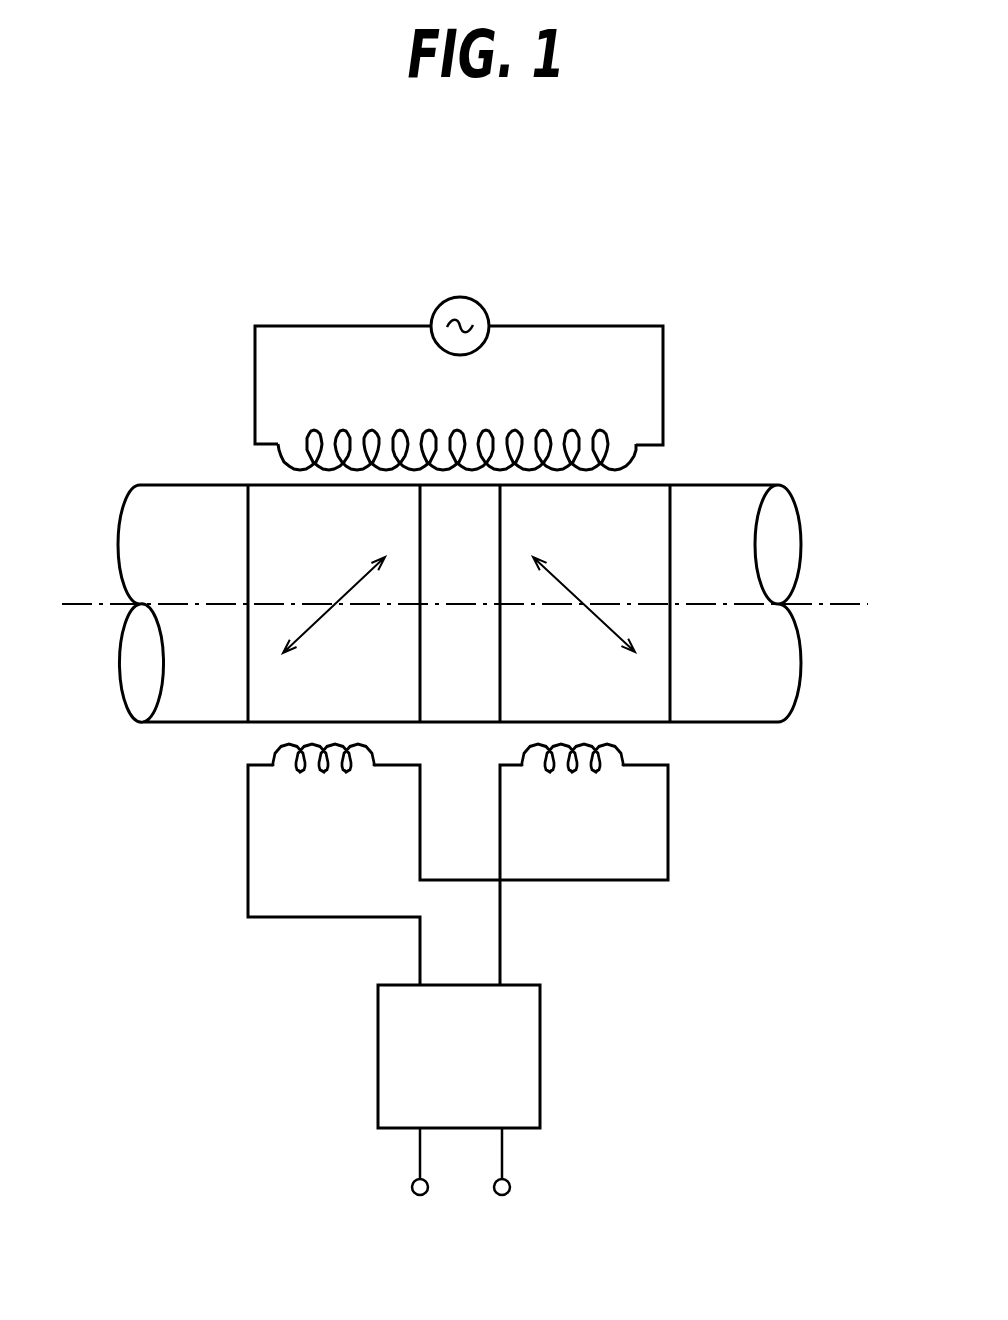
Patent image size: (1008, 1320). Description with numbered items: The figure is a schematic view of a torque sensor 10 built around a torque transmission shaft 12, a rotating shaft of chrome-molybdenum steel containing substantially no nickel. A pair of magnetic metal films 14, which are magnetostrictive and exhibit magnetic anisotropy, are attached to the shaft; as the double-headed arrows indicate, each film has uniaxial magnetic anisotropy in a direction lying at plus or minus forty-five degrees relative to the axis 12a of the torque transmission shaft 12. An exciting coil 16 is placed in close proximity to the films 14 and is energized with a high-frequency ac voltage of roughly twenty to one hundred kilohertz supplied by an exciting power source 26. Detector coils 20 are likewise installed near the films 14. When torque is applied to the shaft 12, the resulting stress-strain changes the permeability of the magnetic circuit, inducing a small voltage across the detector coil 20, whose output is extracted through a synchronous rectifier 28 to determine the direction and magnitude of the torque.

The torque sensor 10 is at (689, 301).
The torque transmission shaft 12 is at (740, 500).
The axis of the torque transmission shaft 12a is at (855, 606).
The magnetic metal film 14 is at (272, 500).
The exciting coil 16 is at (578, 436).
The detector coil 20 is at (318, 776).
The exciting power source 26 is at (457, 296).
The synchronous rectifier 28 is at (507, 1062).